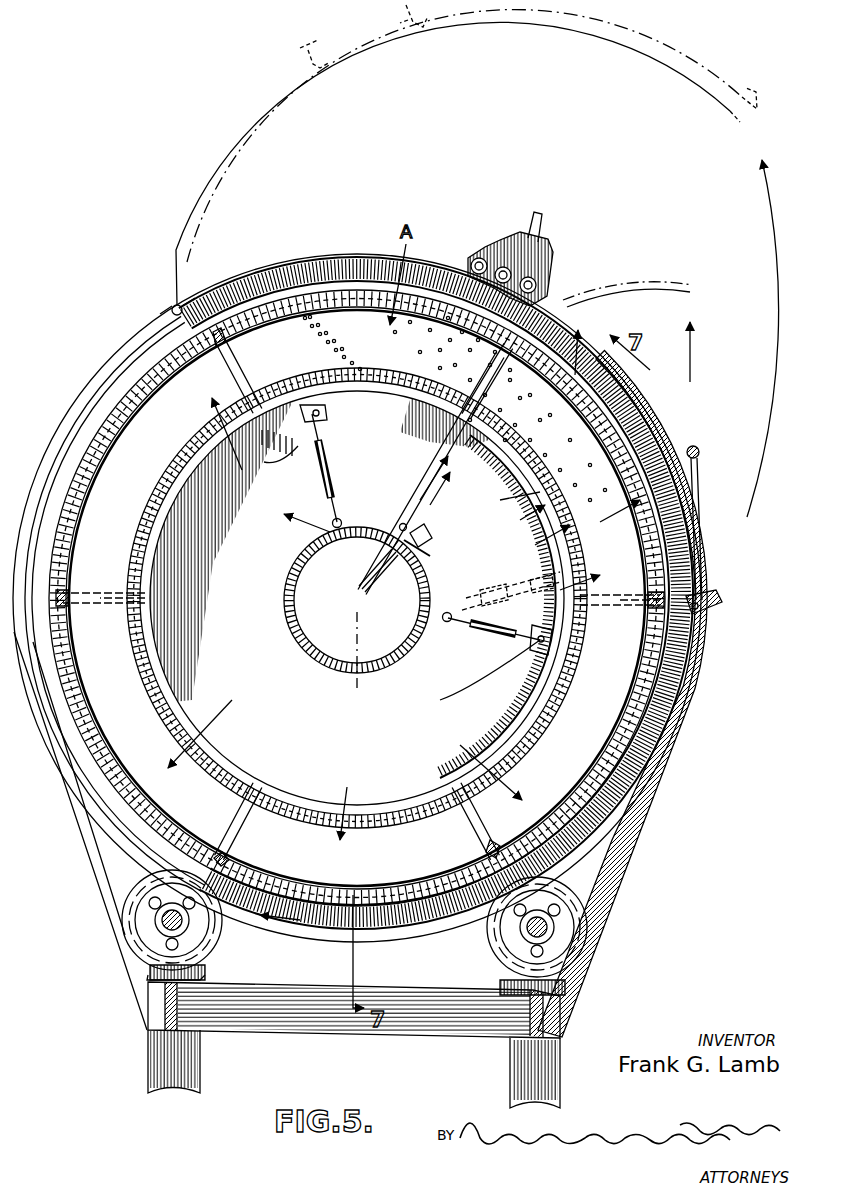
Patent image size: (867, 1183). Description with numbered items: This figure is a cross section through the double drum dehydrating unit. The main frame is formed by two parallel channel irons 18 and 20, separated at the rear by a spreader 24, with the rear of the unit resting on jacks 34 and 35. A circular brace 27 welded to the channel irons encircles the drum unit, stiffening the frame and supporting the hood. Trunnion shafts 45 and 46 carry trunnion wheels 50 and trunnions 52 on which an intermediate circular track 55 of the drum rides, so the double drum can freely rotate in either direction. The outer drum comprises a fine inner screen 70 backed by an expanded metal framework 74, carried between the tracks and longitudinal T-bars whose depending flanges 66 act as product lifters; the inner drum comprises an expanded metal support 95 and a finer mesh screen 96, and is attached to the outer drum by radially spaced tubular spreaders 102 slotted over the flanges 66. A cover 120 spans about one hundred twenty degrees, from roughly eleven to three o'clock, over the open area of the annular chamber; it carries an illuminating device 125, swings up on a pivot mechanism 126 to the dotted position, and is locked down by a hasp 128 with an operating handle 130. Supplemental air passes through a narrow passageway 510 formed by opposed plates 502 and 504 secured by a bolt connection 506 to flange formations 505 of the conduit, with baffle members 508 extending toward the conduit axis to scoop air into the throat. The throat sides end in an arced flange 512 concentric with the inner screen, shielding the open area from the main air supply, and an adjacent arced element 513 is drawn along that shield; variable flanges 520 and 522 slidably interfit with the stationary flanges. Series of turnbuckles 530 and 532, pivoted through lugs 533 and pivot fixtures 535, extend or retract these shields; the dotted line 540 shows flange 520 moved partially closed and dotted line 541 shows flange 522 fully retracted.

The channel iron 18 is at (526, 1014).
The channel iron 20 is at (178, 1010).
The rear spreader 24 is at (340, 1020).
The circular brace 27 is at (76, 810).
The jack 34 is at (510, 1068).
The jack 35 is at (200, 1063).
The trunnion shaft 45 is at (525, 932).
The trunnion shaft 46 is at (185, 925).
The trunnion wheel 50 is at (210, 958).
The trunnion 52 is at (585, 940).
The intermediate circular track 55 is at (643, 300).
The depending flange 66 is at (232, 342).
The inner screen 70 is at (82, 508).
The expanded metal framework 74 is at (97, 438).
The inner expanded metal support 95 is at (140, 652).
The finer mesh screen 96 is at (136, 650).
The tubular spreader 102 is at (100, 600).
The cover 120 is at (518, 30).
The illuminating device 125 is at (540, 253).
The pivot mechanism 126 is at (170, 310).
The hasp 128 is at (722, 602).
The operating handle 130 is at (698, 478).
The plate 502 is at (463, 500).
The plate 504 is at (470, 462).
The flange formation 505 is at (426, 546).
The bolt connection 506 is at (401, 522).
The baffle member 508 is at (372, 578).
The passageway 510 is at (448, 510).
The flange 512 is at (370, 398).
The material flow 513 is at (538, 520).
The variable flange 520 is at (536, 660).
The variable flange 522 is at (300, 418).
The turnbuckle 530 is at (318, 470).
The turnbuckle 532 is at (490, 636).
The lug 533 is at (330, 524).
The pivot fixture 535 is at (396, 568).
The dotted line position 540 is at (565, 500).
The dotted line position 541 is at (405, 372).